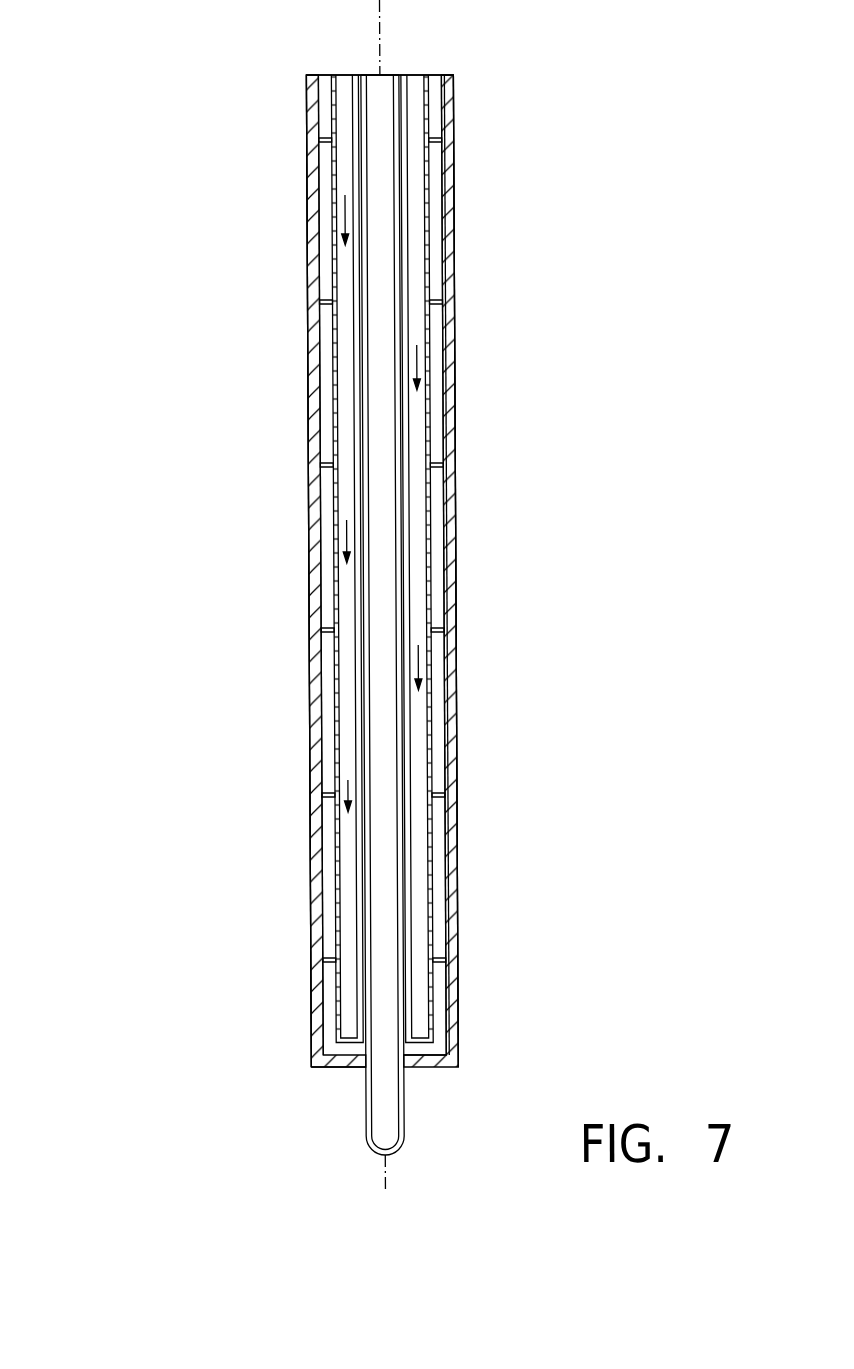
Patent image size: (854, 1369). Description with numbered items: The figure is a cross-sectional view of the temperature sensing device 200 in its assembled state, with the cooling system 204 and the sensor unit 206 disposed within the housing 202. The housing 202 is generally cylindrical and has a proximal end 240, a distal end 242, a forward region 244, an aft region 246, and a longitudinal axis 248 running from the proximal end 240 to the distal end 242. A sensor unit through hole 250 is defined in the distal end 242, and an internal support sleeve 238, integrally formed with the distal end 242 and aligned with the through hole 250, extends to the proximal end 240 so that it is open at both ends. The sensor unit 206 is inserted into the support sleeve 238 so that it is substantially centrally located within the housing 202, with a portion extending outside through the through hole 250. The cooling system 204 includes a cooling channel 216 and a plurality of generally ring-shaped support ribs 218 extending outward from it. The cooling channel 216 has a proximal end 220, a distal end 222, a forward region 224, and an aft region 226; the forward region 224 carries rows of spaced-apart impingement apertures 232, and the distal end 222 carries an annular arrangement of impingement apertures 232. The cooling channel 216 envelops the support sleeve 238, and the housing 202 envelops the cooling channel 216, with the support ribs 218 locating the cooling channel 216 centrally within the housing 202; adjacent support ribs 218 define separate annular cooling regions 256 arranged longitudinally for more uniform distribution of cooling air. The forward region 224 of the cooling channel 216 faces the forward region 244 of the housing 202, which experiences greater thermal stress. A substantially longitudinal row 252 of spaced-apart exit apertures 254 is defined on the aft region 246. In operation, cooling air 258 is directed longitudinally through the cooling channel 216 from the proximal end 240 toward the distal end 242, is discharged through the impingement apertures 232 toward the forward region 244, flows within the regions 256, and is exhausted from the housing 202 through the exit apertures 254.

The temperature sensing device 200 is at (165, 116).
The housing 202 is at (294, 83).
The cooling system 204 is at (440, 178).
The sensor unit 206 is at (407, 1095).
The cooling channel 216 is at (443, 345).
The support ribs 218 is at (322, 142).
The proximal end 220 is at (384, 75).
The distal end 222 is at (428, 1050).
The forward region 224 is at (312, 436).
The aft region 226 is at (445, 581).
The impingement apertures 232 is at (336, 505).
The support sleeve 238 is at (411, 232).
The proximal end 240 is at (452, 75).
The distal end 242 is at (303, 1067).
The forward region 244 is at (294, 808).
The aft region 246 is at (466, 819).
The longitudinal axis 248 is at (380, 18).
The sensor unit through hole 250 is at (359, 1072).
The longitudinal row 252 is at (468, 448).
The exit apertures 254 is at (443, 710).
The annular cooling regions 256 is at (314, 208).
The cooling air 258 is at (339, 535).